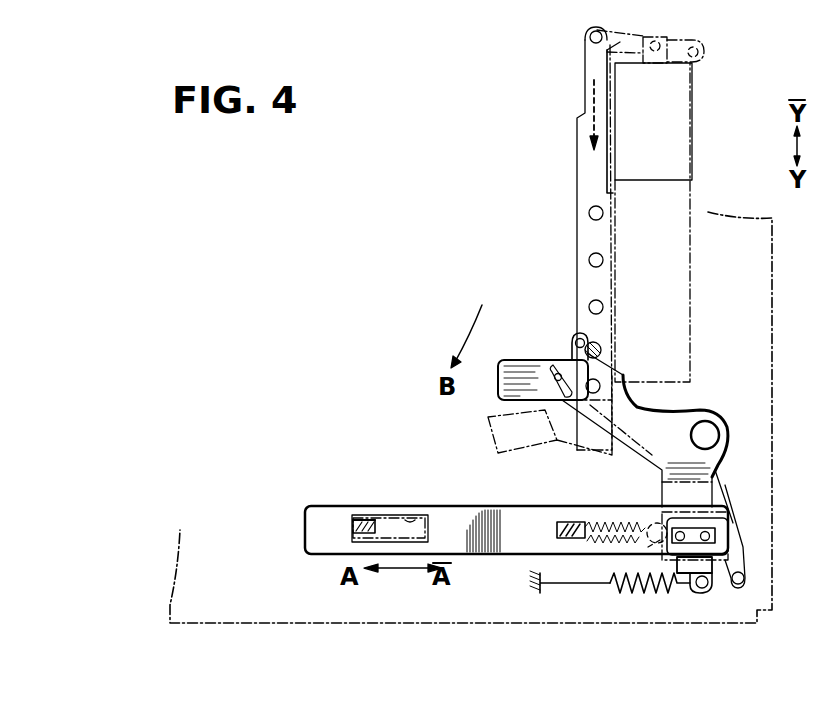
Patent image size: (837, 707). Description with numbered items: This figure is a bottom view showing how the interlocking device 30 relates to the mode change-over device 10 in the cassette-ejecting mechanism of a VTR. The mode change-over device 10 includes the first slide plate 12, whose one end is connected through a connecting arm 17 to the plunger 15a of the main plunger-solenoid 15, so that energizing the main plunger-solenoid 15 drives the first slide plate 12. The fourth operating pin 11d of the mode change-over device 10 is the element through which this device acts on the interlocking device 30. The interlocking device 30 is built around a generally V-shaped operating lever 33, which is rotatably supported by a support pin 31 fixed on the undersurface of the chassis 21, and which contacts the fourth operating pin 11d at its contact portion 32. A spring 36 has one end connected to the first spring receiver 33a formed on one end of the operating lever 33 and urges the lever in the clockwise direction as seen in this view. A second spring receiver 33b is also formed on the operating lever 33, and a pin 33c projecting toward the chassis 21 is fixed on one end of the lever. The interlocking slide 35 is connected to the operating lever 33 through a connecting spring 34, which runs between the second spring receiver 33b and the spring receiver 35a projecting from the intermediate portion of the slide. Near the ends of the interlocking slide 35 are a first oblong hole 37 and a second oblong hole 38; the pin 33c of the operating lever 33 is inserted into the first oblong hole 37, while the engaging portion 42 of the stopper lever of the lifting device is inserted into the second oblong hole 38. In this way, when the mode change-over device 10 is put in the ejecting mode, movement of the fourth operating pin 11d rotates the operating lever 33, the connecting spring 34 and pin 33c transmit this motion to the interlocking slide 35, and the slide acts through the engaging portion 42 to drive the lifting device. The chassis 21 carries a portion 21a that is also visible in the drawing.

The mode change-over device 10 is at (706, 173).
The first slide plate 12 is at (595, 70).
The main plunger-solenoid 15 is at (663, 110).
The plunger 15a is at (700, 40).
The connecting arm 17 is at (620, 42).
The fourth operating pin 11d is at (574, 334).
The chassis 21 is at (170, 605).
The projection 21a is at (358, 520).
The interlocking device 30 is at (497, 558).
The support pin 31 is at (706, 430).
The contact portion 32 is at (603, 363).
The operating lever 33 is at (723, 470).
The first spring receiver 33a is at (697, 590).
The second spring receiver 33b is at (648, 547).
The pin 33c is at (682, 533).
The connecting spring 34 is at (582, 545).
The interlocking slide 35 is at (458, 515).
The spring receiver 35a is at (560, 522).
The spring 36 is at (645, 590).
The first oblong hole 37 is at (715, 545).
The second oblong hole 38 is at (410, 522).
The engaging portion 42 is at (353, 532).